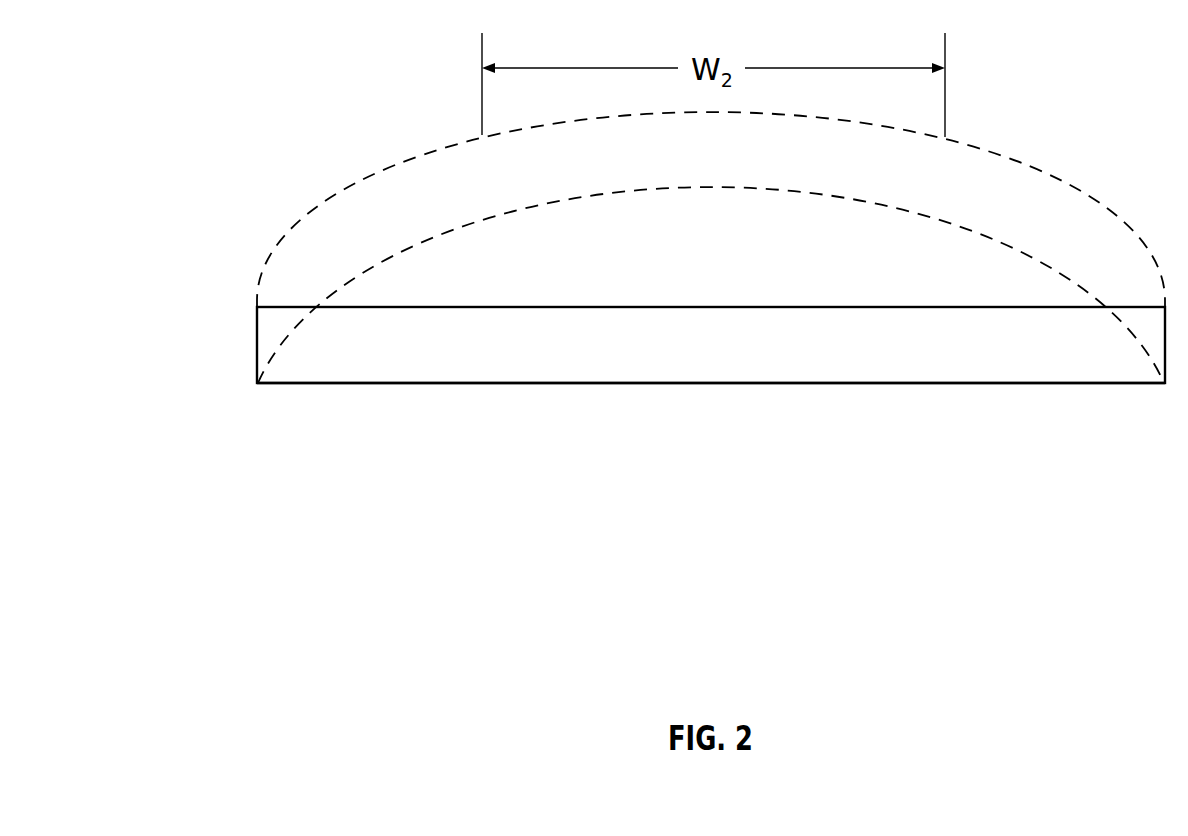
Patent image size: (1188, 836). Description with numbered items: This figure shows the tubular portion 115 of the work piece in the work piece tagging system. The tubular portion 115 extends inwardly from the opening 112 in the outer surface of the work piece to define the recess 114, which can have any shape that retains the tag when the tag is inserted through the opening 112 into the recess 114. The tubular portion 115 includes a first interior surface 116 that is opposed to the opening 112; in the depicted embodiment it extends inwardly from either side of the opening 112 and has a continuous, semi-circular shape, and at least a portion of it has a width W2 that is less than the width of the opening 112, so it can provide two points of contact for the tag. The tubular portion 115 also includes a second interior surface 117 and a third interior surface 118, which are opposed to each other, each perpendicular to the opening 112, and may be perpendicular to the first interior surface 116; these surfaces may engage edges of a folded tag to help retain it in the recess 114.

The opening 112 is at (762, 363).
The recess 114 is at (866, 243).
The tubular portion 115 is at (260, 215).
The first interior surface 116 is at (378, 203).
The second interior surface 117 is at (472, 182).
The third interior surface 118 is at (312, 396).